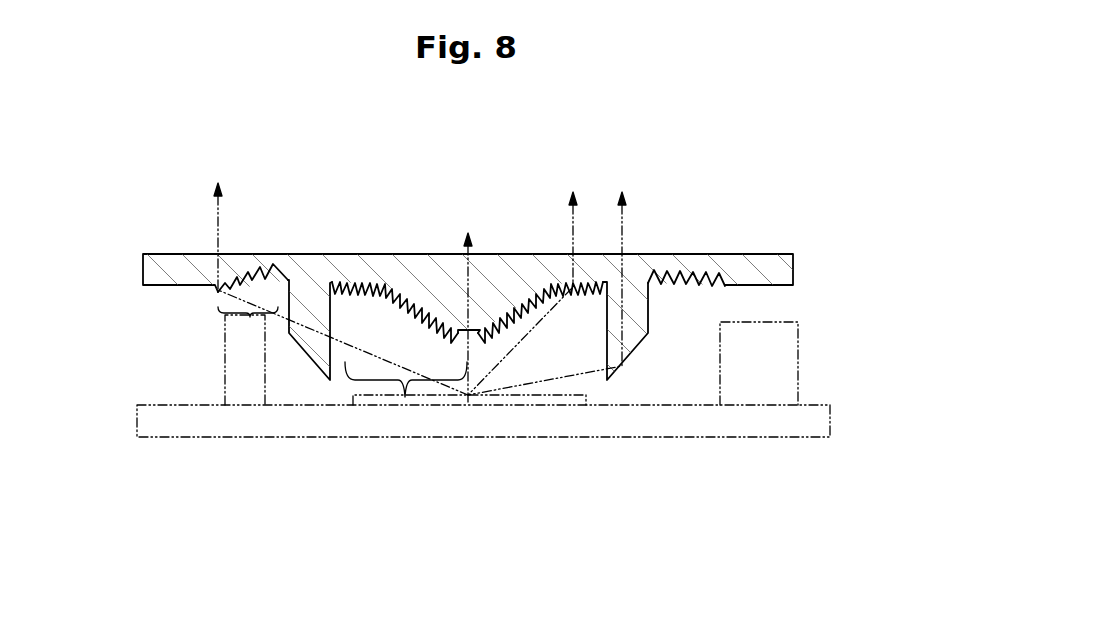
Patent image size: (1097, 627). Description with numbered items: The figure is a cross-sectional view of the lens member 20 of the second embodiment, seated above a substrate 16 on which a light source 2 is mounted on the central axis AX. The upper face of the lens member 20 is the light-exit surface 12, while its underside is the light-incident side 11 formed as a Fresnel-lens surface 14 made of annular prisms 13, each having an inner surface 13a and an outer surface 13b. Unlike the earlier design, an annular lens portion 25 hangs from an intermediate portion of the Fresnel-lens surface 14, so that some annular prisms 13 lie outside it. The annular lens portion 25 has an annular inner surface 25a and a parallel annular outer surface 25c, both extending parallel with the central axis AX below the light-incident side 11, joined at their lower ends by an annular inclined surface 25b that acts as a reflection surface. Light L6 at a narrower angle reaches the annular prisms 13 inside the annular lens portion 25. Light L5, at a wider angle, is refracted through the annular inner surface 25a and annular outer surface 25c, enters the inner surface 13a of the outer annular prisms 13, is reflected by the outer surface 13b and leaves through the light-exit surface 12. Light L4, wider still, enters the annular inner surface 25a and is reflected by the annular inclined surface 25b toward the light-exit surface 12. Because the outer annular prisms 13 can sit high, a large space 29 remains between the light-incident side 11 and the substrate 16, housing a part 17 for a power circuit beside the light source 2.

The light source 2 is at (565, 396).
The light-incident side 11 is at (495, 340).
The light-exit surface 12 is at (730, 254).
The annular prisms 13 is at (218, 295).
The inner surface 13a is at (580, 287).
The outer surface 13b is at (578, 288).
The Fresnel-lens surface 14 is at (405, 397).
The substrate 16 is at (720, 438).
The part for a power circuit 17 is at (224, 396).
The lens member 20 is at (527, 330).
The annular lens portion 25 is at (383, 517).
The annular inner surface 25a is at (332, 367).
The annular inclined surface 25b is at (318, 366).
The annular outer surface 25c is at (289, 328).
The space 29 is at (170, 298).
The light L4 is at (624, 232).
The light L5 is at (215, 214).
The light L6 is at (572, 212).
The central axis AX is at (466, 250).